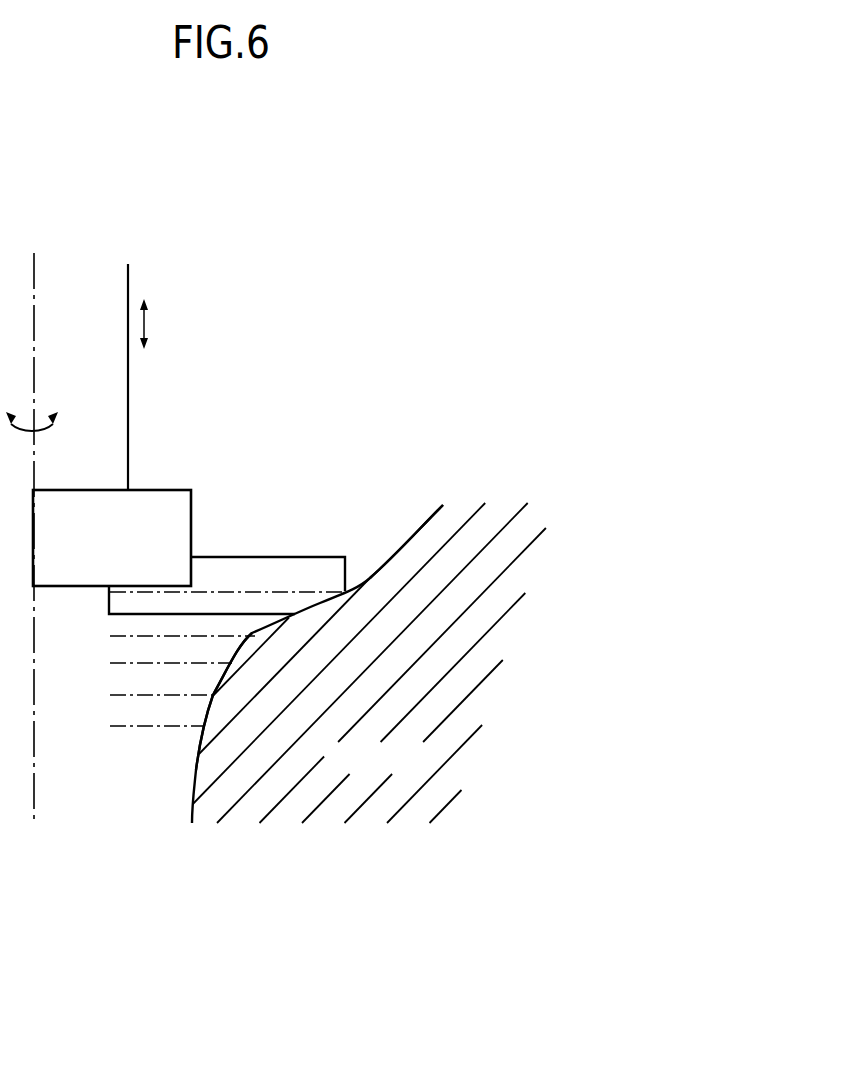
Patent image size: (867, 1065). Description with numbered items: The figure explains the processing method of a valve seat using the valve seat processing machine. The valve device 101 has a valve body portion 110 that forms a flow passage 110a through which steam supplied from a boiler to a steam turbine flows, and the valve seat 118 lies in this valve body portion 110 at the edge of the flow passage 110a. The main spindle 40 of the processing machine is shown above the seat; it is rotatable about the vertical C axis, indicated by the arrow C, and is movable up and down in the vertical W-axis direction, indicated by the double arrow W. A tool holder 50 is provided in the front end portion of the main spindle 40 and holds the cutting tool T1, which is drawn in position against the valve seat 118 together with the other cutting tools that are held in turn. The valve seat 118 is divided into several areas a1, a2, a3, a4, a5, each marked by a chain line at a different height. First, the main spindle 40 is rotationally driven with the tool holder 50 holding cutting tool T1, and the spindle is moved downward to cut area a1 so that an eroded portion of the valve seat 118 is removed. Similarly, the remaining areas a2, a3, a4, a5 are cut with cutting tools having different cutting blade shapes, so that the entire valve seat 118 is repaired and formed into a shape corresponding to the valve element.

The main spindle 40 is at (128, 392).
The tool holder 50 is at (167, 489).
The valve body portion 110 is at (369, 663).
The valve device 101 is at (330, 769).
The flow passage 110a is at (360, 387).
The valve seat 118 is at (207, 708).
The cutting tool T1 is at (277, 556).
The area of the valve seat a1 is at (110, 593).
The area of the valve seat a2 is at (110, 615).
The area of the valve seat a3 is at (110, 637).
The area of the valve seat a4 is at (110, 664).
The area of the valve seat a5 is at (110, 696).
The C axis C is at (39, 537).
The W-axis direction W is at (171, 324).